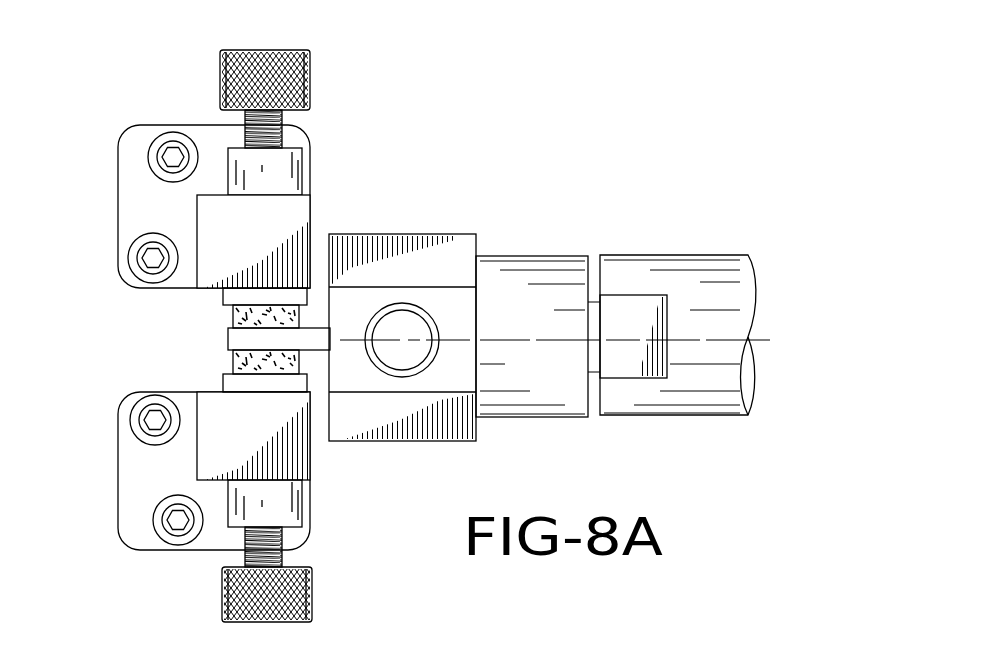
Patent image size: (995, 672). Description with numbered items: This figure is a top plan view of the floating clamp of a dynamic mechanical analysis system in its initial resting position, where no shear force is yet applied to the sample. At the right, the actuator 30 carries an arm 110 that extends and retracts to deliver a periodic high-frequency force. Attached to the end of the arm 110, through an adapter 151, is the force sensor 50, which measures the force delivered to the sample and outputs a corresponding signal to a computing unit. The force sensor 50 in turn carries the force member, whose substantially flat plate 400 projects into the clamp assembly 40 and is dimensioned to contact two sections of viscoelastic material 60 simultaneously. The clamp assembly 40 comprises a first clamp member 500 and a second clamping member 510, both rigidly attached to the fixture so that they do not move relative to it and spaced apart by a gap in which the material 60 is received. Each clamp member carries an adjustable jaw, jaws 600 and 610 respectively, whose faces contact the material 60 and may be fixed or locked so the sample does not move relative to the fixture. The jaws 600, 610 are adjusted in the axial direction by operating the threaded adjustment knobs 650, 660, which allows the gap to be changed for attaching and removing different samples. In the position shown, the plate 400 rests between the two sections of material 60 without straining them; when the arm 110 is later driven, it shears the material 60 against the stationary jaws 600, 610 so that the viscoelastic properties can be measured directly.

The actuator 30 is at (647, 301).
The clamp assembly 40 is at (220, 135).
The force sensor 50 is at (453, 245).
The viscoelastic material 60 is at (233, 315).
The arm 110 is at (595, 320).
The adapter 151 is at (538, 395).
The flat plate 400 is at (233, 338).
The first clamp member 500 is at (222, 245).
The second clamping member 510 is at (225, 430).
The jaw 600 is at (263, 297).
The jaw 610 is at (266, 382).
The threaded adjustment knob 650 is at (268, 50).
The threaded adjustment knob 660 is at (268, 622).